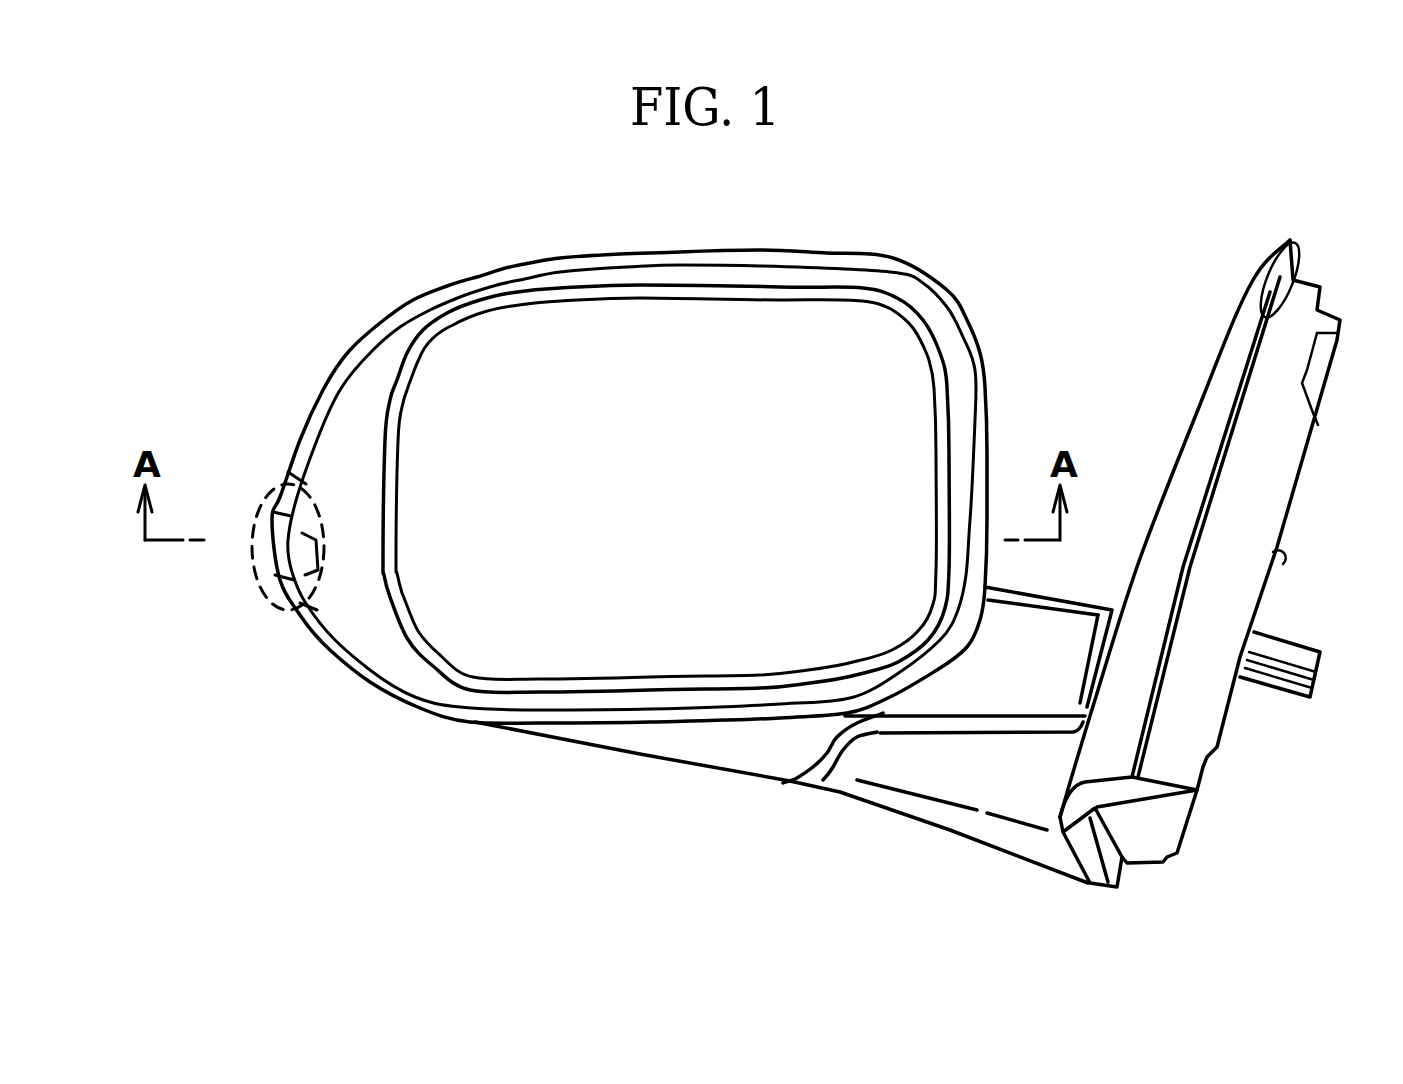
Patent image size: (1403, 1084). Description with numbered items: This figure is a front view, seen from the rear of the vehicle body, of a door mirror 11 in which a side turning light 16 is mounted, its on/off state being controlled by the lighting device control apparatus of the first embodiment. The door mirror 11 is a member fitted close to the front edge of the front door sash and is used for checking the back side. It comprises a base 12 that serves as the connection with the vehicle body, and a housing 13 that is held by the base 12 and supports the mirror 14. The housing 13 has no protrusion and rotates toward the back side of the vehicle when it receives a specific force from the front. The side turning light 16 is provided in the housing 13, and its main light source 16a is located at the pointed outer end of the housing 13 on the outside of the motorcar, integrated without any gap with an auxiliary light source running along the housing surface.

The door mirror 11 is at (400, 293).
The base 12 is at (926, 822).
The housing 13 is at (825, 254).
The mirror 14 is at (703, 505).
The side turning light 16 is at (267, 483).
The main light source 16a is at (273, 545).